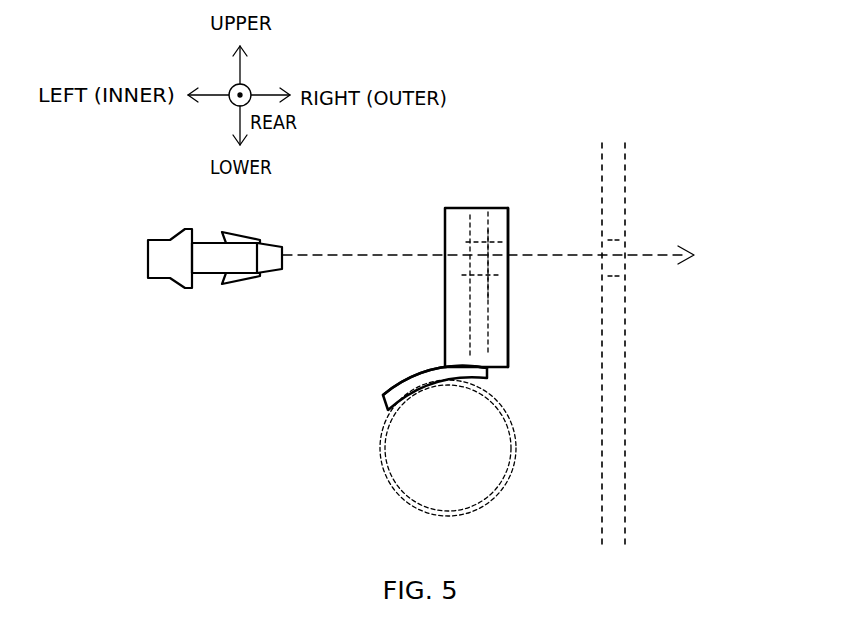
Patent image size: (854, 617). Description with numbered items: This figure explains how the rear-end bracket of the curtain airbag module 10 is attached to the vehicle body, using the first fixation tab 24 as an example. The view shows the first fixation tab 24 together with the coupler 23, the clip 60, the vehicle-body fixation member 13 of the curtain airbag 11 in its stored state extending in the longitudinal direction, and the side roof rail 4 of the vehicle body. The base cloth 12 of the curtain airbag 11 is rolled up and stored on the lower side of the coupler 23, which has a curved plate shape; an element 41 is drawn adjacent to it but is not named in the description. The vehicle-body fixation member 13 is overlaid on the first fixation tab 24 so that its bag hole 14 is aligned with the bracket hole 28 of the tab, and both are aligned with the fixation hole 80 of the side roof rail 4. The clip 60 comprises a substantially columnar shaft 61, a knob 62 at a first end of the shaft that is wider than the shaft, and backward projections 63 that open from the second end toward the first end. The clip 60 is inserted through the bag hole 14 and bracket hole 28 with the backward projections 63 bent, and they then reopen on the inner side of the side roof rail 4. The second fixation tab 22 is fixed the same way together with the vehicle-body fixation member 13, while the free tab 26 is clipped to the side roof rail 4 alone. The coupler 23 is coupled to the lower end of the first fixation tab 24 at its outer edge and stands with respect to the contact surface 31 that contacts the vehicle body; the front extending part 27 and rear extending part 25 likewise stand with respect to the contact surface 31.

The side roof rail 4 is at (627, 190).
The fixation hole 80 is at (627, 243).
The curtain airbag module 10 is at (426, 219).
The first fixation tab 24 is at (527, 236).
The second fixation tab 22 is at (527, 236).
The free tab 26 is at (470, 208).
The bag hole 14 is at (470, 270).
The vehicle-body fixation member 13 is at (470, 298).
The bracket hole 28 is at (508, 263).
The contact surface 31 is at (505, 325).
The coupler 23 is at (404, 365).
The rear extending part 25 is at (404, 365).
The front extending part 27 is at (413, 385).
The curved holding piece 41 is at (384, 428).
The base cloth 12 is at (403, 448).
The curtain airbag 11 is at (417, 468).
The clip 60 is at (212, 313).
The shaft 61 is at (208, 262).
The knob 62 is at (165, 268).
The backward projections 63 is at (241, 288).